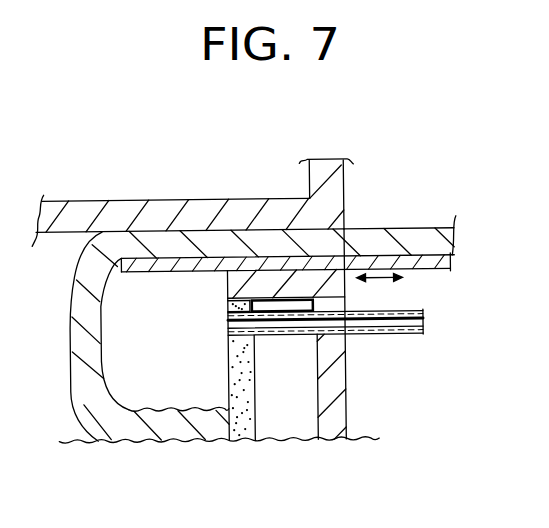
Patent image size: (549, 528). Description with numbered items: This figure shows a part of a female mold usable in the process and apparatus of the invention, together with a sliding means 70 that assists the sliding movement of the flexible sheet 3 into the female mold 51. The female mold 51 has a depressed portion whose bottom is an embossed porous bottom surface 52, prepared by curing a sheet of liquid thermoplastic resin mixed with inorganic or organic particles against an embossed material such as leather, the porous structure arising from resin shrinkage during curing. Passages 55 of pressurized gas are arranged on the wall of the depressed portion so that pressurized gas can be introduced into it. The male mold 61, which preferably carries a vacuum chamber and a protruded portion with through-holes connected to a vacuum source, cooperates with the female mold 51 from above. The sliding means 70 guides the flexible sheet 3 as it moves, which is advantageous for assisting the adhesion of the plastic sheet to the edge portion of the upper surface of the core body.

The flexible sheet 3 is at (428, 229).
The male mold 61 is at (333, 198).
The sliding means 70 is at (418, 262).
The female mold 51 is at (345, 393).
The passages of pressurized gas 55 is at (411, 334).
The embossed porous bottom surface 52 is at (255, 388).